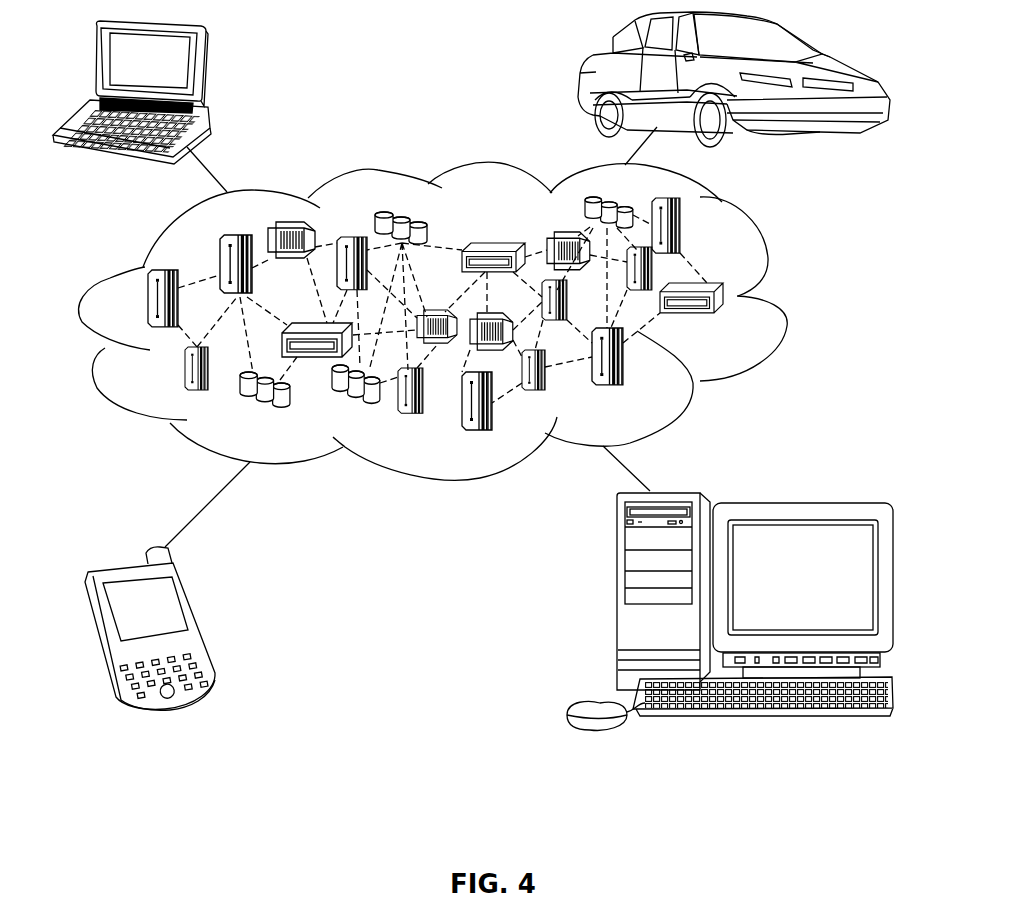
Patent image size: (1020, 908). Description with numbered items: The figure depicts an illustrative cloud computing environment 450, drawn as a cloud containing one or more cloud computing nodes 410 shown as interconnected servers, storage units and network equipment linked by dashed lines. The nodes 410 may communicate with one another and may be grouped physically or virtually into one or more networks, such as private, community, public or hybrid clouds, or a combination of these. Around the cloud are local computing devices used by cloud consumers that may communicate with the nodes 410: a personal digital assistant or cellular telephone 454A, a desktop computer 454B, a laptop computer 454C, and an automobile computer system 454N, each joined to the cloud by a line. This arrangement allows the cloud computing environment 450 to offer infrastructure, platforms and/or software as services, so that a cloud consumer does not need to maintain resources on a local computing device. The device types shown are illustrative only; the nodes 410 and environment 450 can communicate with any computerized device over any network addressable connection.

The cloud computing nodes 410 is at (760, 326).
The cloud computing environment 450 is at (767, 260).
The personal digital assistant (PDA) or cellular telephone 454A is at (195, 620).
The desktop computer 454B is at (616, 600).
The laptop computer 454C is at (203, 65).
The automobile computer system 454N is at (591, 73).